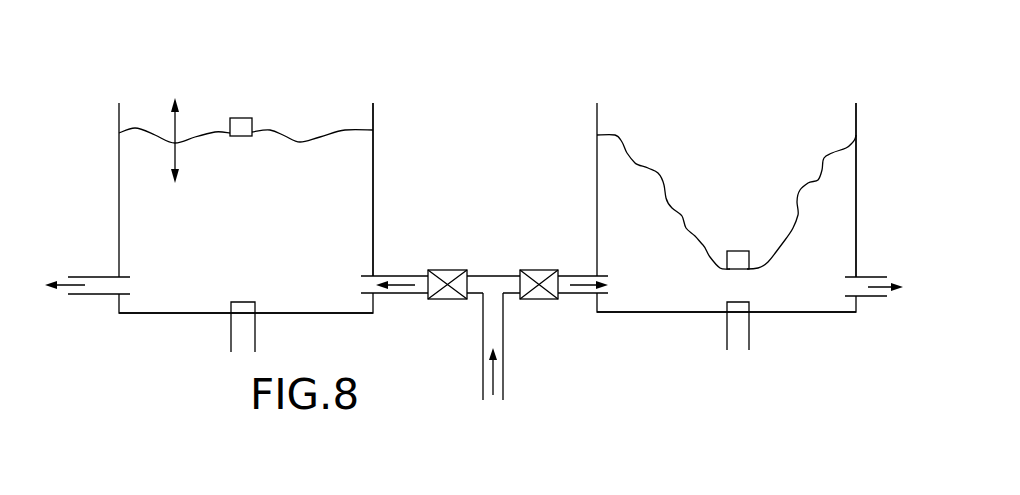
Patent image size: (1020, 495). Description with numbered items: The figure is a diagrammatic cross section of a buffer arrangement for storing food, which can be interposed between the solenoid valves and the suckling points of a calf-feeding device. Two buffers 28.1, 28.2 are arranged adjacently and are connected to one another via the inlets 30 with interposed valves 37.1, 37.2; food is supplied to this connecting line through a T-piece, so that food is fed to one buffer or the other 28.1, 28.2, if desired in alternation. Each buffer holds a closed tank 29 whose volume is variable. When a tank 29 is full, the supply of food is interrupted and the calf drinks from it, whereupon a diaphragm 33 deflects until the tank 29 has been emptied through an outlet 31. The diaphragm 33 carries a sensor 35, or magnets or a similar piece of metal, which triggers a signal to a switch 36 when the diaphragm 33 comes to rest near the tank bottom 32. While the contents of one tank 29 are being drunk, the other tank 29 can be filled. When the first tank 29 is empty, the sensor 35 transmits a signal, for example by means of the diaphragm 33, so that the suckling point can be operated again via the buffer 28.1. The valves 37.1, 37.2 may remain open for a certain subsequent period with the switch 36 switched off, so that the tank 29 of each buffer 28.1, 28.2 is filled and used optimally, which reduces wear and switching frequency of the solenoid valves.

The buffer 28.1 is at (103, 78).
The buffer 28.2 is at (812, 104).
The tank 29 is at (380, 177).
The inlet 30 is at (385, 275).
The outlet 31 is at (95, 277).
The tank bottom 32 is at (185, 313).
The diaphragm 33 is at (347, 129).
The sensor 35 is at (241, 128).
The switch 36 is at (250, 308).
The valve 37.1 is at (445, 275).
The valve 37.2 is at (535, 272).